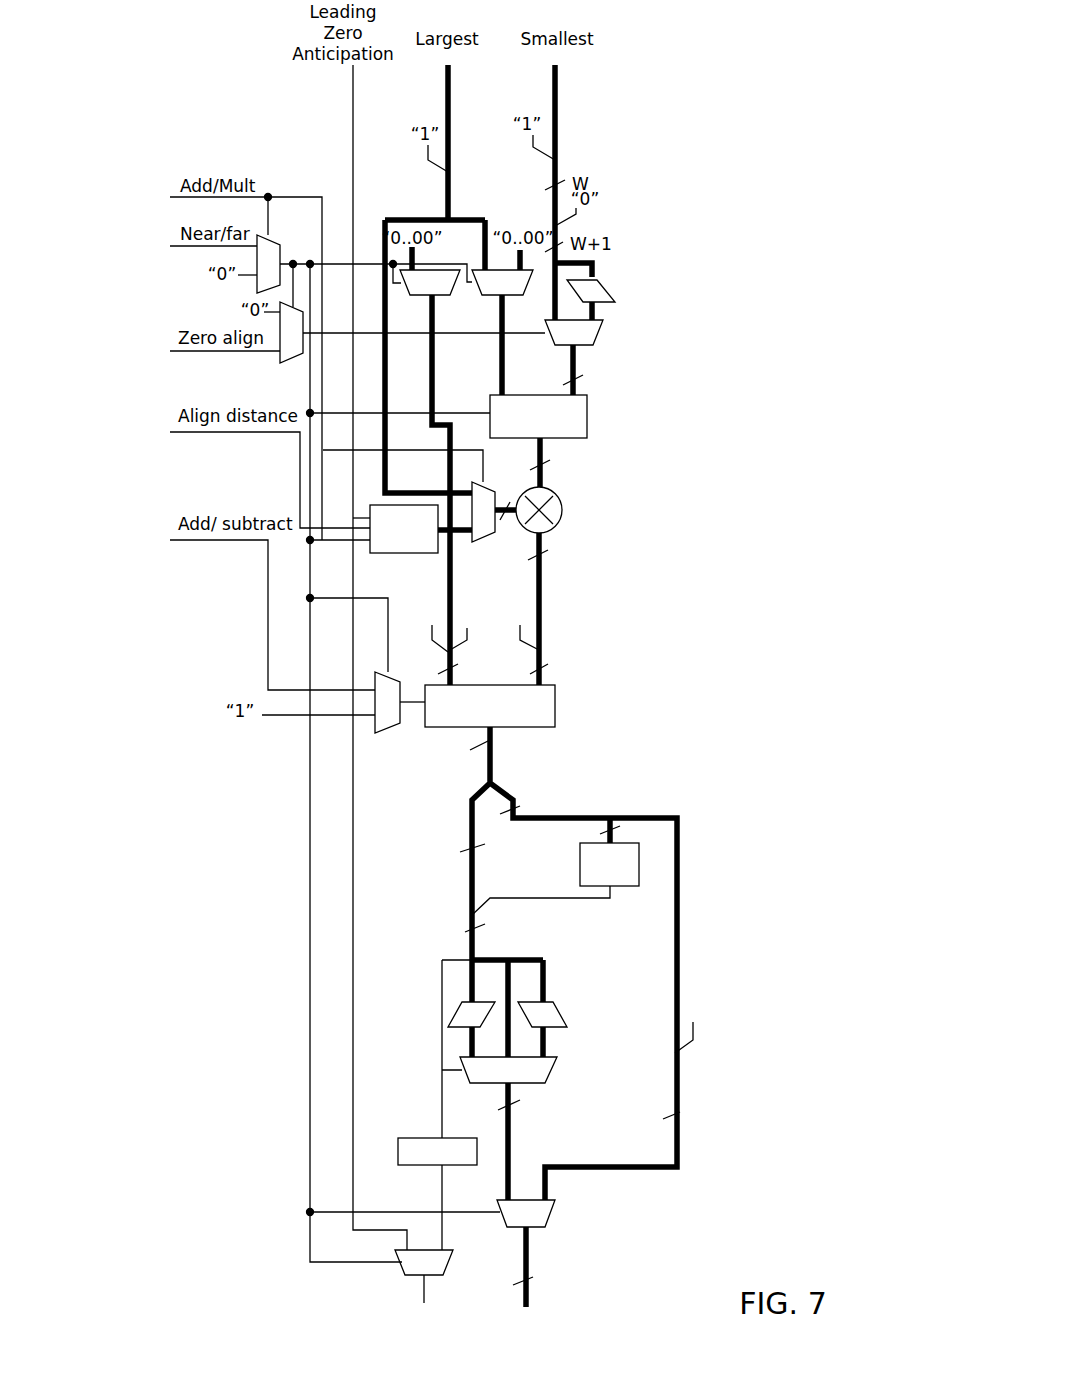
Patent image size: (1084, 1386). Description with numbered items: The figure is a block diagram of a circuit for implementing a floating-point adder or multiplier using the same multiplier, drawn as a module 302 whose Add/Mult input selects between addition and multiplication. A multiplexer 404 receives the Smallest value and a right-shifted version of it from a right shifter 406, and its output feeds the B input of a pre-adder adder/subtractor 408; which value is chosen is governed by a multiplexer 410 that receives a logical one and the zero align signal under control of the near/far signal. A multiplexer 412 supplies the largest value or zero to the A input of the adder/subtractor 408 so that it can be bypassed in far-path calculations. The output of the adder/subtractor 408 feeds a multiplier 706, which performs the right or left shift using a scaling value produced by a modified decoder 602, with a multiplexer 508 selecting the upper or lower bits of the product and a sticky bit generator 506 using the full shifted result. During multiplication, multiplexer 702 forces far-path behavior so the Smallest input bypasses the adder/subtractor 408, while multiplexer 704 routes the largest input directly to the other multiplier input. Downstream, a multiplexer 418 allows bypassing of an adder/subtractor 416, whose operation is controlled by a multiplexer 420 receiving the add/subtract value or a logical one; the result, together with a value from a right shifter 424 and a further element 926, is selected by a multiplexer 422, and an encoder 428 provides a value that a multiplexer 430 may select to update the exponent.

The multiplexer 702 is at (280, 243).
The multiplexer 410 is at (280, 360).
The multiplexer 418 is at (426, 296).
The multiplexer 412 is at (489, 296).
The right shifter 406 is at (600, 280).
The multiplexer 404 is at (548, 348).
The adder/subtractor 408 is at (590, 428).
The multiplier 706 is at (565, 512).
The multiplexer 704 is at (485, 542).
The modified decoder 602 is at (402, 556).
The adder/subtractor 416 is at (557, 720).
The multiplexer 420 is at (398, 727).
The sticky bit generator 506 is at (628, 888).
The inverter 926 is at (456, 1012).
The right shifter 424 is at (560, 1012).
The multiplexer 422 is at (497, 1086).
The encoder 428 is at (418, 1167).
The multiplexer 508 is at (556, 1214).
The multiplexer 430 is at (403, 1277).
The dual path processing portion 302 is at (658, 1214).